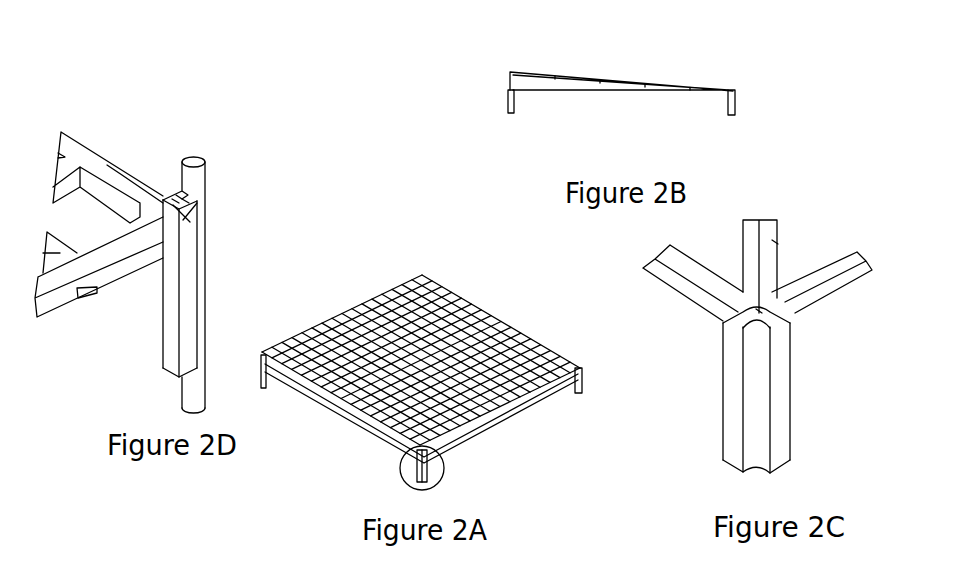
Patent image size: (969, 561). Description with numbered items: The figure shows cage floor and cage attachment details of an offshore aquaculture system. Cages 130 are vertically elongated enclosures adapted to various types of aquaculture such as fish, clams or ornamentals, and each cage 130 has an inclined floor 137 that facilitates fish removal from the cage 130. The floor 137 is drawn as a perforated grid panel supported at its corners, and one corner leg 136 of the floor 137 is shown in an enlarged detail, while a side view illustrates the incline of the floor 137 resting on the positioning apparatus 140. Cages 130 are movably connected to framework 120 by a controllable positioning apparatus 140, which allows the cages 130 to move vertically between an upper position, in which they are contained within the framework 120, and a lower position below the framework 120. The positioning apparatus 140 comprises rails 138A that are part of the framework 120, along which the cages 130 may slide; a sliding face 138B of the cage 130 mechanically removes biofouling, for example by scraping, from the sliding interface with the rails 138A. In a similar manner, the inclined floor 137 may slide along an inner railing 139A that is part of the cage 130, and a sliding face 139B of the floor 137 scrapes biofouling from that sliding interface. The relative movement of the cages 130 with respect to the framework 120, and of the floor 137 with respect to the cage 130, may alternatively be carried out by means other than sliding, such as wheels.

In FIG. 2D, the framework 120 is at (205, 183).
In FIG. 2D, the cage 130 is at (110, 164).
In FIG. 2C, the corner leg post 136 is at (772, 210).
In FIG. 2A, the corner leg post 136 is at (400, 470).
In FIG. 2B, the inclined floor 137 is at (523, 70).
In FIG. 2C, the inclined floor 137 is at (846, 257).
In FIG. 2A, the inclined floor 137 is at (513, 407).
In FIG. 2D, the rail 138A is at (183, 189).
In FIG. 2D, the sliding face 138B is at (178, 192).
In FIG. 2C, the sliding face 138B is at (757, 352).
In FIG. 2C, the inner railing 139A is at (760, 310).
In FIG. 2C, the sliding face 139B is at (774, 242).
In FIG. 2D, the controllable positioning apparatus 140 is at (187, 222).
In FIG. 2B, the controllable positioning apparatus 140 is at (507, 102).
In FIG. 2C, the controllable positioning apparatus 140 is at (722, 387).